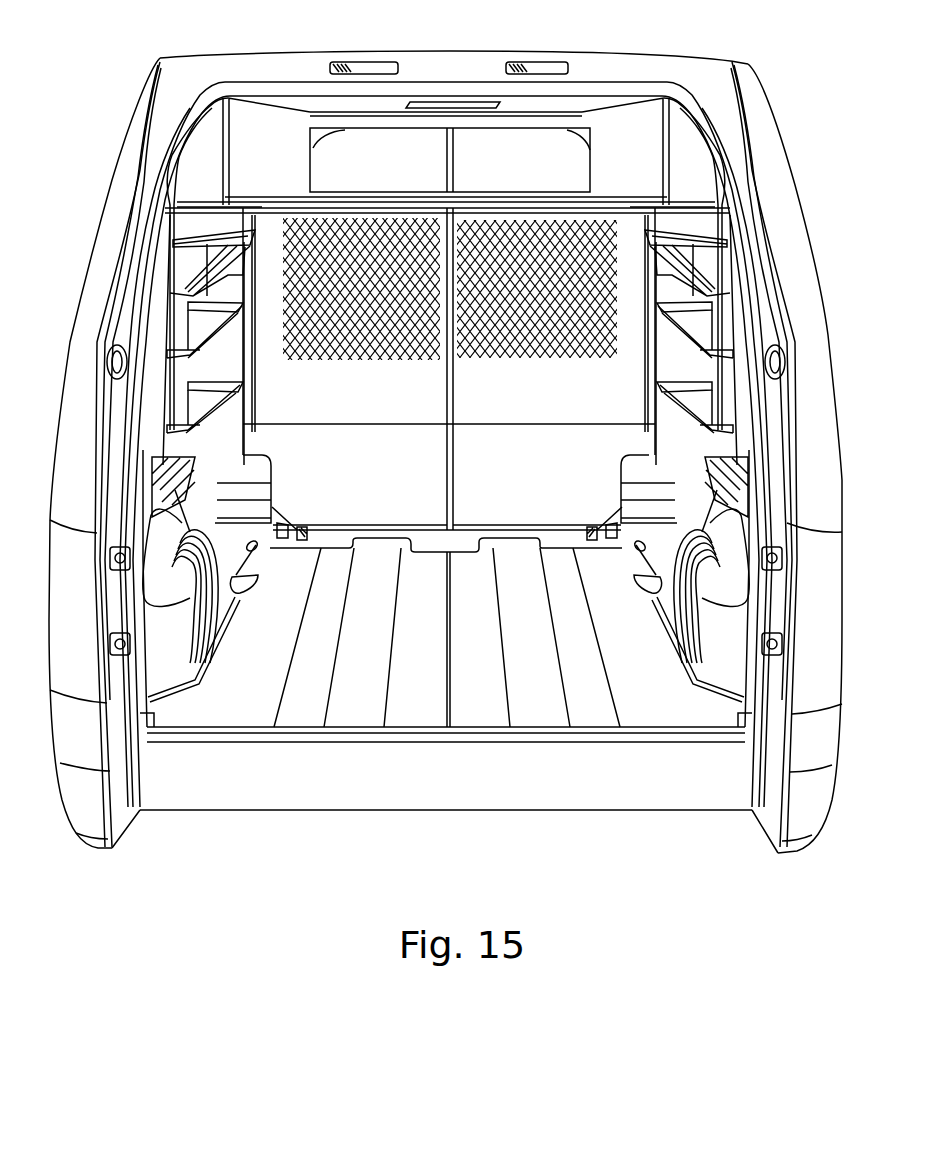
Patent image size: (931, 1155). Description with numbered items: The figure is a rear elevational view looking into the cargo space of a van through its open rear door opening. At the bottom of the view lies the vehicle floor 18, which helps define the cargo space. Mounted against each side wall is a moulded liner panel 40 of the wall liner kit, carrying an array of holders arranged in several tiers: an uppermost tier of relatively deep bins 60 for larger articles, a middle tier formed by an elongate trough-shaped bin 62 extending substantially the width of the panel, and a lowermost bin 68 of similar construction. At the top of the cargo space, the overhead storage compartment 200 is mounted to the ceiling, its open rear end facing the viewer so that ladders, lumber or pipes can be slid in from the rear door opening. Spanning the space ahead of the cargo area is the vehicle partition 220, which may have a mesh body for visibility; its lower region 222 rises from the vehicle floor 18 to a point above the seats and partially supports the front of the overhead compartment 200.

The vehicle floor 18 is at (365, 655).
The moulded liner panel 40 is at (197, 650).
The deep bin 60 is at (701, 279).
The elongate trough-shaped bin 62 is at (709, 392).
The lowermost bin 68 is at (740, 459).
The overhead storage compartment 200 is at (501, 178).
The vehicle partition 220 is at (330, 397).
The lower region 222 is at (430, 407).